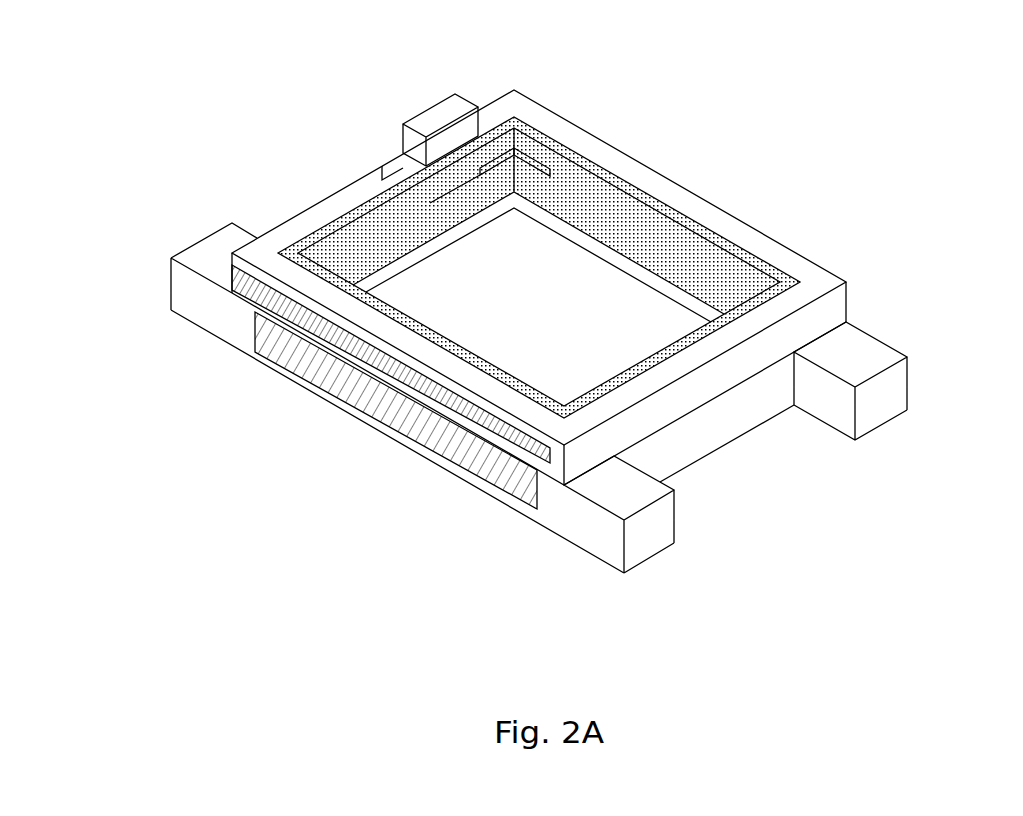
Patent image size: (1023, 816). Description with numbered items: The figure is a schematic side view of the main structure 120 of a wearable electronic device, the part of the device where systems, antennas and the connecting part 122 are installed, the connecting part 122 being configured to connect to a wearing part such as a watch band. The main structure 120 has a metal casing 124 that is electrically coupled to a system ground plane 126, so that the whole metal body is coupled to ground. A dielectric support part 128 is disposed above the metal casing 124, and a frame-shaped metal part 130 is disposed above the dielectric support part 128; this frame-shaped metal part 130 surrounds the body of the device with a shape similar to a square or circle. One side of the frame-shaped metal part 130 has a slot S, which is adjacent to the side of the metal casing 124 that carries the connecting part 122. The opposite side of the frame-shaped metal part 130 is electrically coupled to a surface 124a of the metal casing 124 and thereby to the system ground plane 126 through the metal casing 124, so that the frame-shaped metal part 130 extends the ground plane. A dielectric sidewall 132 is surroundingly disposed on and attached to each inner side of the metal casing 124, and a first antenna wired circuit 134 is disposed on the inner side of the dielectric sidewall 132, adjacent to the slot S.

The main structure 120 is at (188, 82).
The connecting part 122 is at (455, 94).
The metal casing 124 is at (813, 322).
The surface of the metal casing 124a is at (675, 422).
The system ground plane 126 is at (505, 322).
The dielectric support part 128 is at (252, 287).
The frame-shaped metal part 130 is at (737, 233).
The dielectric sidewall 132 is at (662, 232).
The first antenna wired circuit 134 is at (458, 180).
The slot S is at (376, 170).